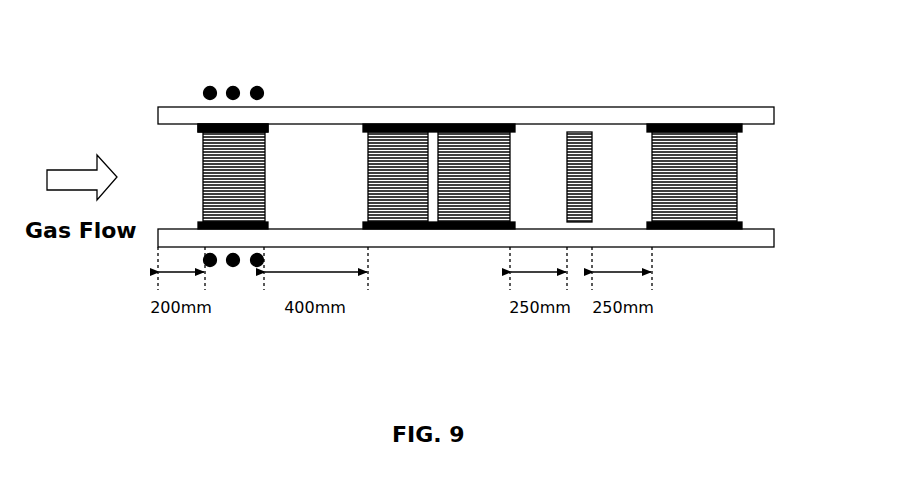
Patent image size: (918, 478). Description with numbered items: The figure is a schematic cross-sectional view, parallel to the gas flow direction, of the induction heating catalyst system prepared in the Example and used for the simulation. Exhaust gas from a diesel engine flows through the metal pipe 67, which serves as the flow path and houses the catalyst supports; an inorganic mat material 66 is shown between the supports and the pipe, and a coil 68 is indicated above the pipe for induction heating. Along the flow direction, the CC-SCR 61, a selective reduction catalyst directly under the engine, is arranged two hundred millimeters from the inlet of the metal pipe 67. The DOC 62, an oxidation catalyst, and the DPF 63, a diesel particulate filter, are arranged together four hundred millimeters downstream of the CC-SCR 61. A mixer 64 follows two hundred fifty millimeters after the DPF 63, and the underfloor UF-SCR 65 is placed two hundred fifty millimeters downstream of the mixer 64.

The CC-SCR 61 is at (203, 175).
The DOC 62 is at (368, 175).
The DPF 63 is at (512, 175).
The mixer 64 is at (592, 176).
The UF-SCR 65 is at (738, 175).
The inorganic mat material 66 is at (268, 123).
The metal pipe 67 is at (364, 107).
The coil 68 is at (213, 88).